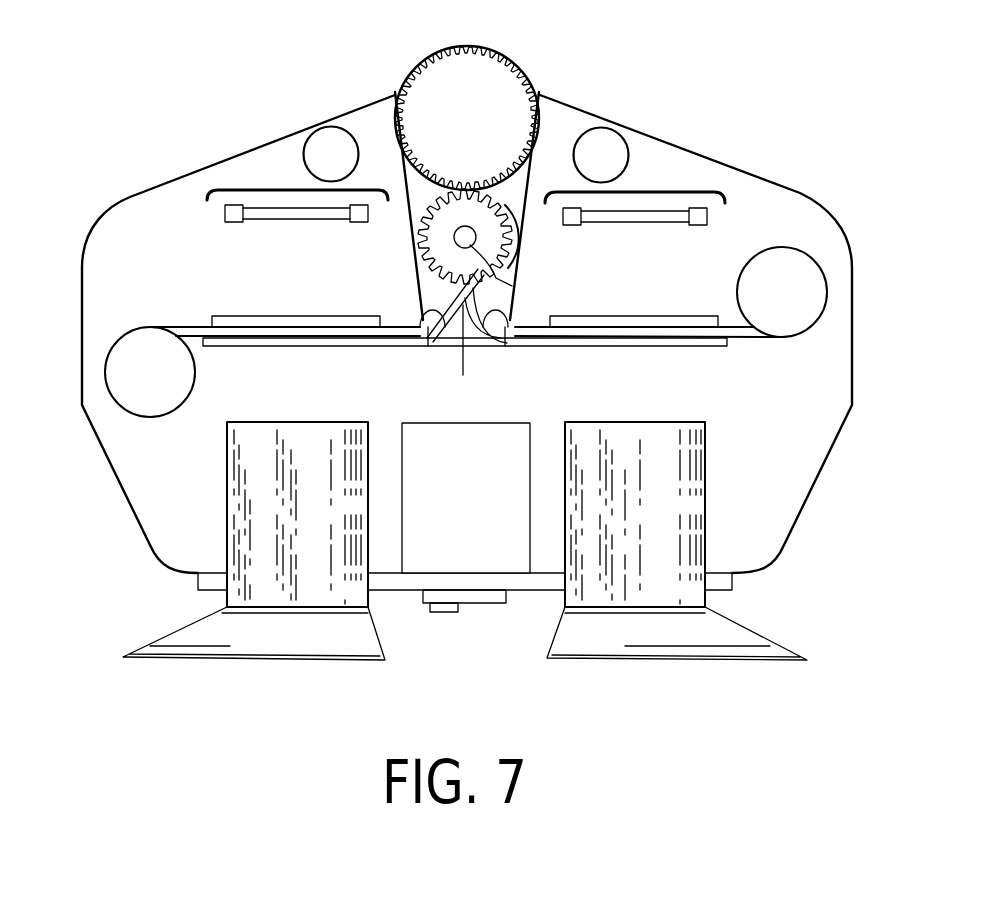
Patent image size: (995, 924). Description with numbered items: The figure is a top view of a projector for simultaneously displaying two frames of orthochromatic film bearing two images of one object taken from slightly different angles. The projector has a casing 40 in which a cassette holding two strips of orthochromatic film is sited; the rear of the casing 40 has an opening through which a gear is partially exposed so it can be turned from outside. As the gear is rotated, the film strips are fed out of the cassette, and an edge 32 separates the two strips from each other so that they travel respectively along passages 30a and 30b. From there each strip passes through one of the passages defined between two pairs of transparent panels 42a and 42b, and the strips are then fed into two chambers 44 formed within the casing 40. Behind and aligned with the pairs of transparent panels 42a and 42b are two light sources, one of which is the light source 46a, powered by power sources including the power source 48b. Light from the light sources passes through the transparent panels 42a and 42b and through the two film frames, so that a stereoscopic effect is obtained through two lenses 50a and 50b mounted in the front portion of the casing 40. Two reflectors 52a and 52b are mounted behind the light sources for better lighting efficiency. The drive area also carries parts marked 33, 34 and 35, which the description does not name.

The casing 40 is at (128, 197).
The drive belt 33 is at (418, 272).
The drive gear 34 is at (425, 238).
The gear flange 35 is at (510, 233).
The edge 32 is at (503, 316).
The passage 30a is at (422, 308).
The passage 30b is at (509, 312).
The chamber 44 is at (122, 373).
The pair of transparent panels 42a is at (325, 318).
The pair of transparent panels 42b is at (620, 340).
The power source 48b is at (600, 145).
The reflector 52a is at (208, 200).
The reflector 52b is at (710, 192).
The light source 46a is at (296, 224).
The lens 50a is at (227, 455).
The lens 50b is at (680, 490).